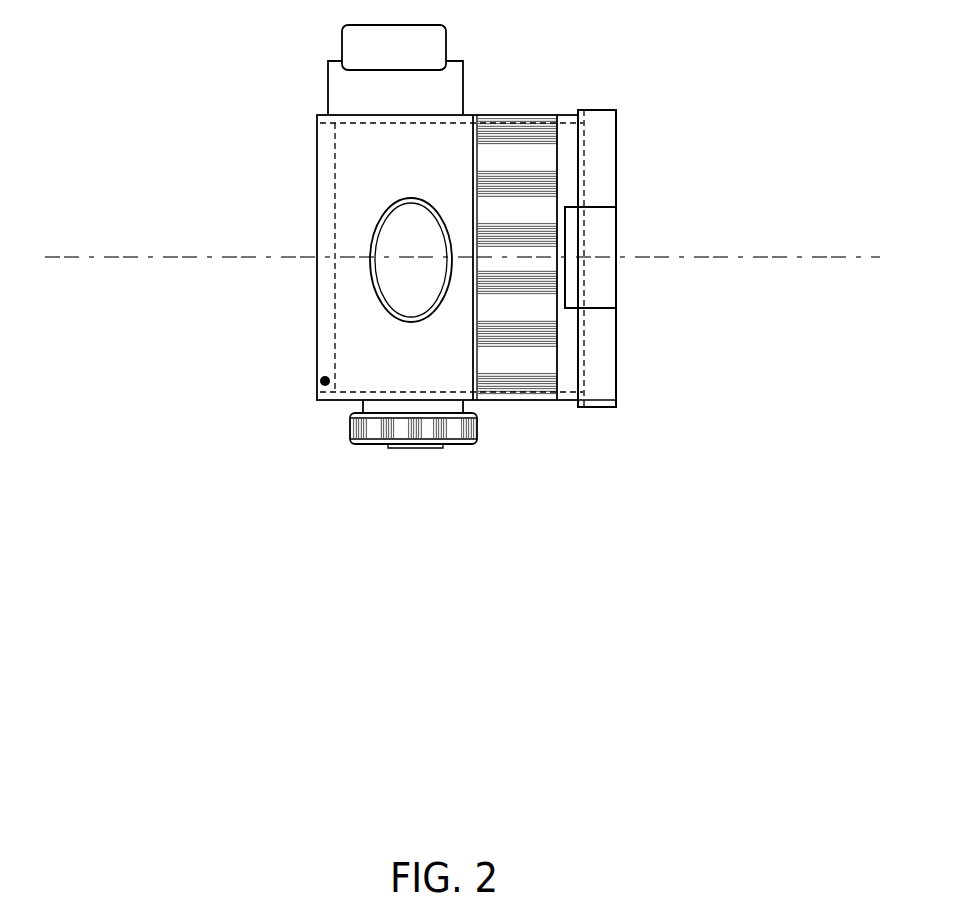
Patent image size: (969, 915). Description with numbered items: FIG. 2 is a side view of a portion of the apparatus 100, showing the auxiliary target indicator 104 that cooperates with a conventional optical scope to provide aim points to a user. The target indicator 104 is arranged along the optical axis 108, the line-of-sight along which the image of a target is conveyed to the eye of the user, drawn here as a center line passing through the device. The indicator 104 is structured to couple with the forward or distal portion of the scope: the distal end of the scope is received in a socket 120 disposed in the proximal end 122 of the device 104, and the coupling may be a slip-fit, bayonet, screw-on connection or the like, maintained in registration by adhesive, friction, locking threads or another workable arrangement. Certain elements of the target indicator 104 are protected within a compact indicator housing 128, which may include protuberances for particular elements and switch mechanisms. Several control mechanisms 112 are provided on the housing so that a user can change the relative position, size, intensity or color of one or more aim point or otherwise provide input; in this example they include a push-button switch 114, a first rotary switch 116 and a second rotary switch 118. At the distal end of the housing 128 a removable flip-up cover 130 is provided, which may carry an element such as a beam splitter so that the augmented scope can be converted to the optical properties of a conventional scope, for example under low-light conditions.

The apparatus 100 is at (477, 296).
The auxiliary target indicator 104 is at (439, 296).
The optical axis 108 is at (737, 260).
The control mechanism 112 is at (412, 300).
The push-button switch 114 is at (387, 272).
The first rotary switch 116 is at (415, 483).
The second rotary switch 118 is at (522, 213).
The socket 120 is at (321, 382).
The proximal end 122 is at (400, 258).
The indicator housing 128 is at (332, 70).
The flip-up cover 130 is at (597, 389).